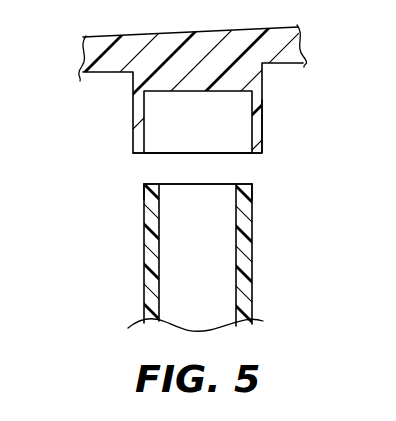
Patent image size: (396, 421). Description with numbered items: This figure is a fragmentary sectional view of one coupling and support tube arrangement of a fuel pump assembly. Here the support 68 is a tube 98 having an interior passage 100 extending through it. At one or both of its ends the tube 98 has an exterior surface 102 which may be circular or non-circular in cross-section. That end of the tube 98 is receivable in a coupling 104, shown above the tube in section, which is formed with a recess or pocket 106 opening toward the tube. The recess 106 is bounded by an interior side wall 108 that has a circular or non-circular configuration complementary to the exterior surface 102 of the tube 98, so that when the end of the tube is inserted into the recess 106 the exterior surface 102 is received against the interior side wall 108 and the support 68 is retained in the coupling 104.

The support 68 is at (179, 270).
The tube 98 is at (128, 272).
The interior passage 100 is at (218, 322).
The exterior surface 102 is at (252, 240).
The coupling 104 is at (198, 105).
The recess 106 is at (247, 163).
The interior side wall 108 is at (185, 142).